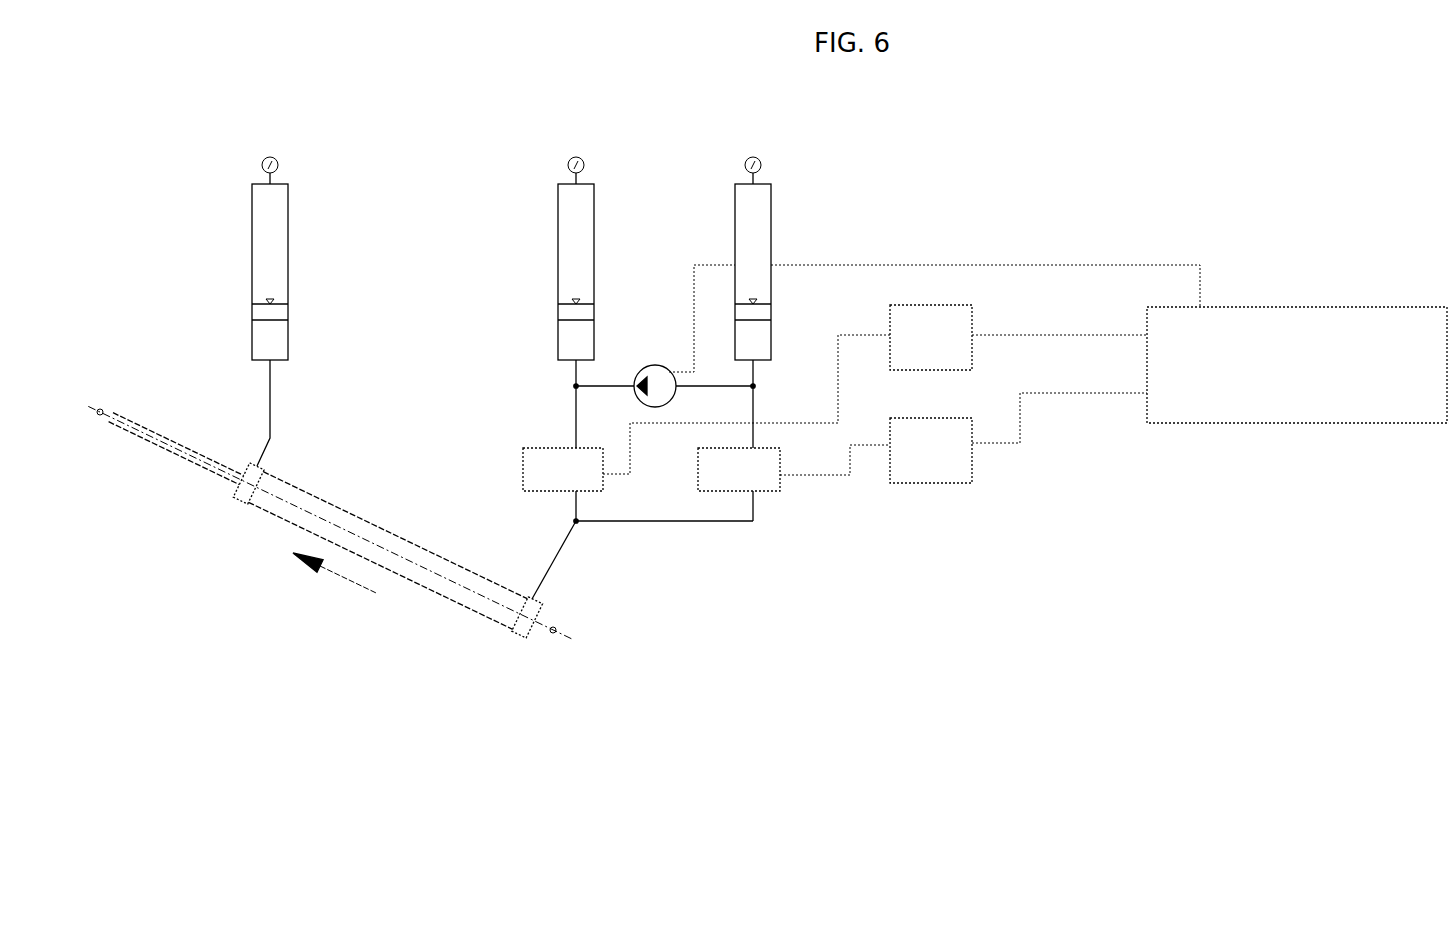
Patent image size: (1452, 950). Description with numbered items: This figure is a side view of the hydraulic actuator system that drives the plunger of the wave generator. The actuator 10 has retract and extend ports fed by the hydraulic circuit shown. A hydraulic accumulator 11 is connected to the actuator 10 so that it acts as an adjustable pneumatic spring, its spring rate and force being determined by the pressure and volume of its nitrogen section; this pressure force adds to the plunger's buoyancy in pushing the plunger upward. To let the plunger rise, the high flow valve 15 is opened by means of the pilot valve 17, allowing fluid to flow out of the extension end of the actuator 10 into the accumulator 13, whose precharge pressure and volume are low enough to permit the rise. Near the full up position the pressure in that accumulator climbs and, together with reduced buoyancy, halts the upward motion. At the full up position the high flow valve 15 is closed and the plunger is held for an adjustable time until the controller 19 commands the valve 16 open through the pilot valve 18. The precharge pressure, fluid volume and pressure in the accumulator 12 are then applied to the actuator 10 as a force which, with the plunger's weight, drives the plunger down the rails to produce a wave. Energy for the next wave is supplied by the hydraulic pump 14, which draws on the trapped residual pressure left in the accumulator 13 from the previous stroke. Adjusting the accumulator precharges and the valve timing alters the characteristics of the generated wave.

The actuator 10 is at (312, 490).
The hydraulic accumulator 11 is at (288, 232).
The accumulator 12 is at (597, 207).
The accumulator 13 is at (773, 220).
The hydraulic pump 14 is at (656, 372).
The high flow valve 15 is at (773, 493).
The valve 16 is at (595, 492).
The pilot valve 17 is at (968, 485).
The pilot valve 18 is at (972, 372).
The controller 19 is at (1248, 428).